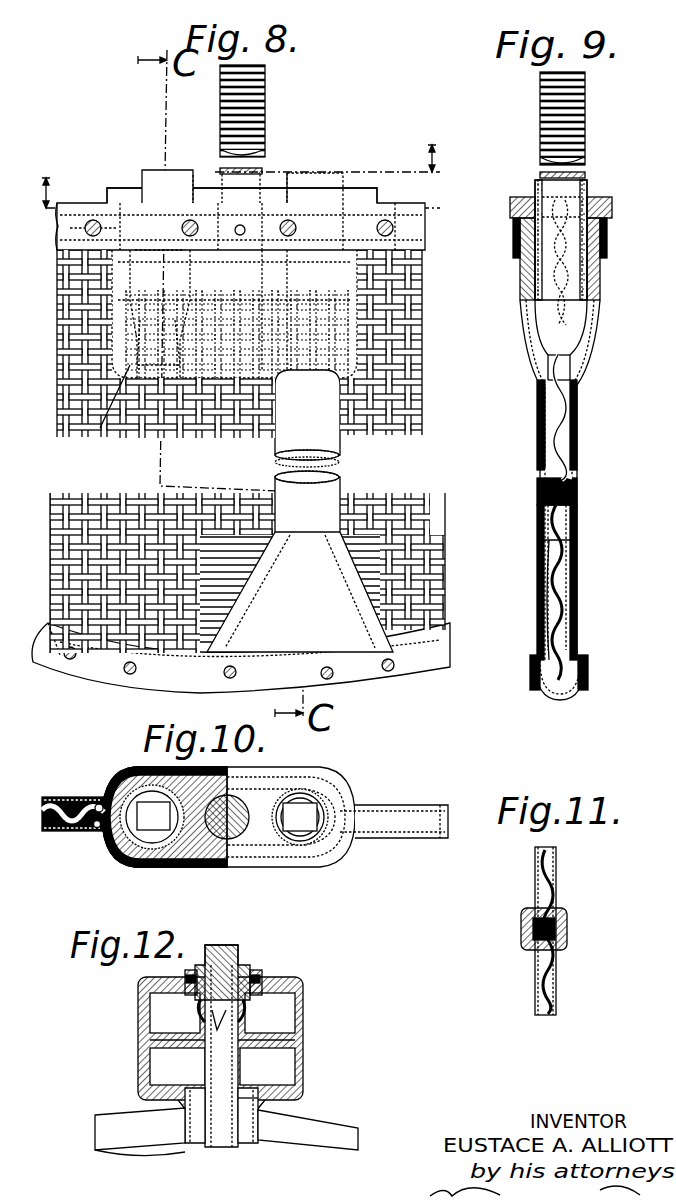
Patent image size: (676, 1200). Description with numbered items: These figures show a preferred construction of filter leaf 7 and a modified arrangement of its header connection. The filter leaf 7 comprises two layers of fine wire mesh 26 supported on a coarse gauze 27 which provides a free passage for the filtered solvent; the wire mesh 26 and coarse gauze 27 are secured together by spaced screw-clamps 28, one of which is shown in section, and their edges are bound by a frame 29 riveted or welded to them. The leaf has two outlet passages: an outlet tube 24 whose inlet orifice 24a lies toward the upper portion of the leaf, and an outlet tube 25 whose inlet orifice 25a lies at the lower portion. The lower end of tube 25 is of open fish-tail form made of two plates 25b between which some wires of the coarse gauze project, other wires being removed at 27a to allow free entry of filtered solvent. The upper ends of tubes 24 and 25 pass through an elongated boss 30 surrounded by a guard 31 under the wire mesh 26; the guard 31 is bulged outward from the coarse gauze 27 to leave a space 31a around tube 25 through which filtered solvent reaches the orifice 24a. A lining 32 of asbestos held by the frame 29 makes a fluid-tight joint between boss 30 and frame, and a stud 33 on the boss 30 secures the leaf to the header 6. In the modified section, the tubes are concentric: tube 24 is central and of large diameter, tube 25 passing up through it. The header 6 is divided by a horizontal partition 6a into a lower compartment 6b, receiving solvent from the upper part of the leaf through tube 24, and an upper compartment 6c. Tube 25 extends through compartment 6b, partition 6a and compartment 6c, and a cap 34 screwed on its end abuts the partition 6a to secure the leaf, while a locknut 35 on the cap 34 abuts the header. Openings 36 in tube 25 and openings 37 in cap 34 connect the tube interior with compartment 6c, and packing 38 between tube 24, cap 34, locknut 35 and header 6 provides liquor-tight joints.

In FIG. 12, the header 6 is at (138, 1024).
In FIG. 12, the partition 6a is at (303, 1043).
In FIG. 12, the compartment 6b is at (222, 1066).
In FIG. 12, the compartment 6c is at (320, 1010).
In FIG. 10, the filter leaf 7 is at (398, 827).
In FIG. 12, the filter leaf 7 is at (140, 1132).
In FIG. 8, the outlet passage 24 is at (160, 170).
In FIG. 9, the outlet passage 24 is at (553, 200).
In FIG. 10, the outlet passage 24 is at (142, 822).
In FIG. 12, the outlet passage 24 is at (190, 1128).
In FIG. 8, the inlet orifice 24a is at (175, 350).
In FIG. 9, the inlet orifice 24a is at (545, 375).
In FIG. 12, the inlet orifice 24a is at (250, 1132).
In FIG. 8, the outlet passage 25 is at (314, 180).
In FIG. 9, the outlet passage 25 is at (575, 555).
In FIG. 10, the outlet passage 25 is at (300, 817).
In FIG. 12, the outlet passage 25 is at (221, 1046).
In FIG. 8, the inlet orifice 25a is at (222, 612).
In FIG. 8, the plates 25b is at (307, 592).
In FIG. 9, the plates 25b is at (543, 592).
In FIG. 9, the fine wire mesh 26 is at (520, 290).
In FIG. 10, the fine wire mesh 26 is at (137, 868).
In FIG. 11, the fine wire mesh 26 is at (535, 872).
In FIG. 8, the coarse gauze 27 is at (62, 352).
In FIG. 9, the coarse gauze 27 is at (537, 433).
In FIG. 10, the coarse gauze 27 is at (70, 797).
In FIG. 11, the coarse gauze 27 is at (537, 982).
In FIG. 8, the removed wires 27a is at (228, 565).
In FIG. 11, the screw-clamp 28 is at (525, 930).
In FIG. 8, the frame 29 is at (381, 710).
In FIG. 9, the frame 29 is at (513, 230).
In FIG. 12, the frame 29 is at (322, 1132).
In FIG. 8, the boss 30 is at (118, 190).
In FIG. 9, the boss 30 is at (600, 297).
In FIG. 10, the boss 30 is at (248, 847).
In FIG. 8, the guard 31 is at (105, 409).
In FIG. 9, the guard 31 is at (530, 345).
In FIG. 9, the space 31a is at (530, 320).
In FIG. 9, the lining 32 is at (607, 255).
In FIG. 8, the stud 33 is at (265, 112).
In FIG. 9, the stud 33 is at (540, 108).
In FIG. 10, the stud 33 is at (232, 810).
In FIG. 12, the cap 34 is at (240, 958).
In FIG. 12, the locknut 35 is at (256, 975).
In FIG. 12, the openings 36 is at (222, 1027).
In FIG. 12, the openings 37 is at (200, 1008).
In FIG. 12, the packing 38 is at (275, 985).